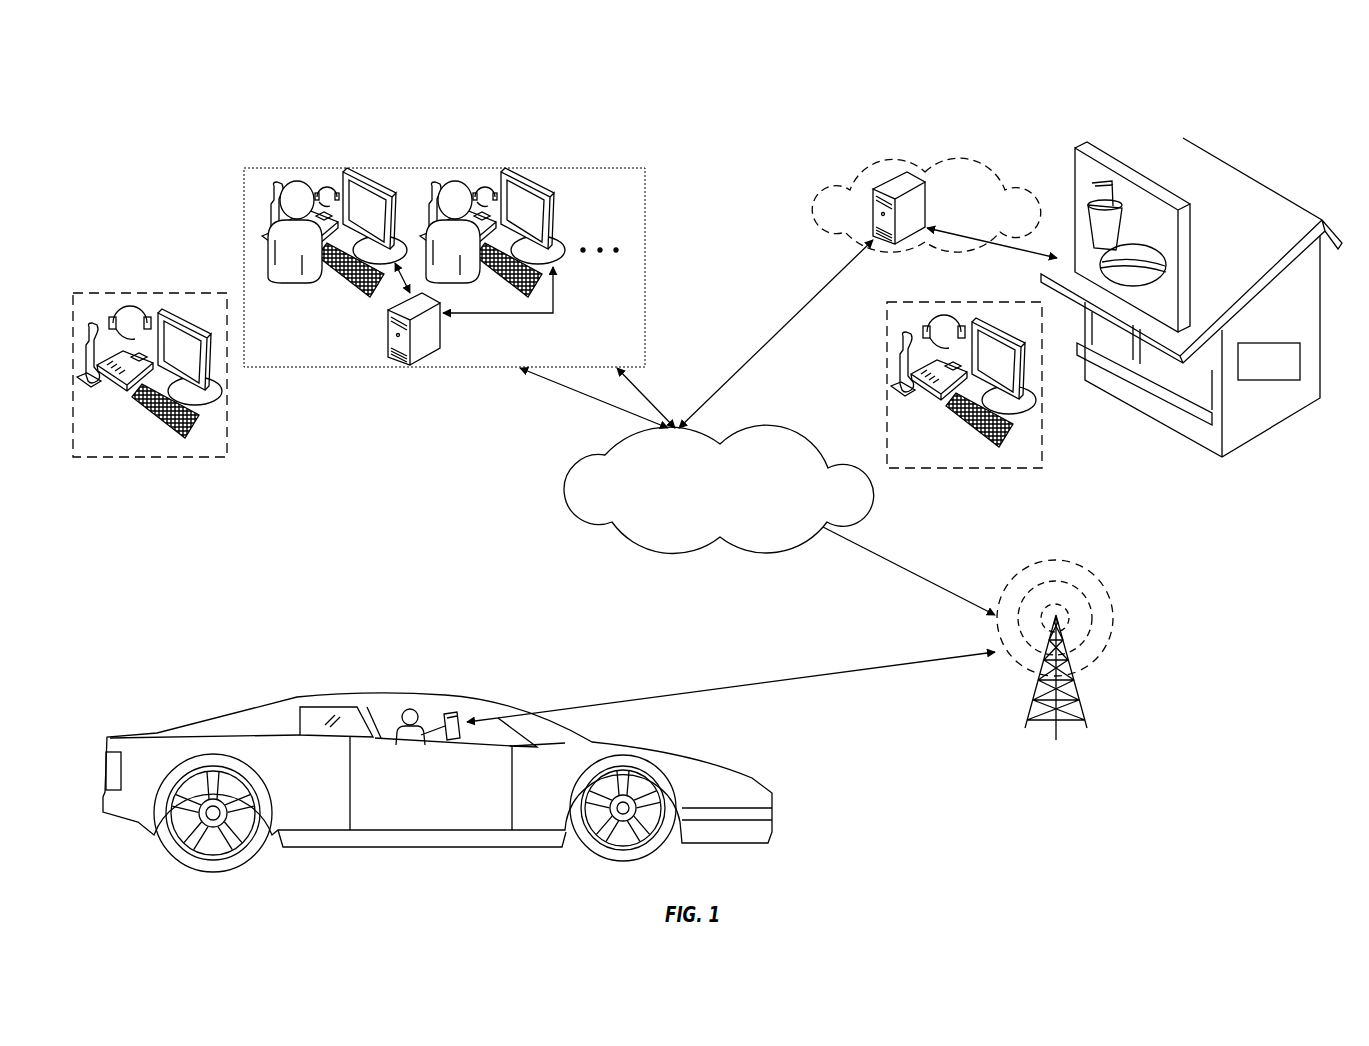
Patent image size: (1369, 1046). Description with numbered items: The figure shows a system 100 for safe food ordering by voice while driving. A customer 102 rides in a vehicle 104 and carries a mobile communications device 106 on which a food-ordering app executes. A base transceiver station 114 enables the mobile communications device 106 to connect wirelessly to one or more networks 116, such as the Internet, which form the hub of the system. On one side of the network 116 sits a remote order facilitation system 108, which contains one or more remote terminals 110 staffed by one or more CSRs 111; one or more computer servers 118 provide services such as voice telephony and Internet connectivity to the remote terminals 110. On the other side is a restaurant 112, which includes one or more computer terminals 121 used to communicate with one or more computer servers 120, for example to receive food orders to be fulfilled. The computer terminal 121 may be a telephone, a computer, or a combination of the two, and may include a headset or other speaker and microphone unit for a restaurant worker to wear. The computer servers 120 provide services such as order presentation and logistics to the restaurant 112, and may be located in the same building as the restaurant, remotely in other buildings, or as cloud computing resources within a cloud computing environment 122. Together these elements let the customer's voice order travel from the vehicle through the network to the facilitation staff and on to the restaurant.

The system 100 is at (1246, 116).
The customer 102 is at (401, 710).
The vehicle 104 is at (307, 697).
The mobile communications device 106 is at (448, 705).
The remote order facilitation system 108 is at (359, 279).
The remote terminal 110 is at (93, 293).
The CSR 111 is at (448, 182).
The restaurant 112 is at (1249, 446).
The base transceiver station 114 is at (1078, 697).
The network 116 is at (760, 428).
The computer server 118 is at (397, 367).
The computer server 120 is at (882, 172).
The computer terminal 121 is at (1042, 455).
The cloud computing environment 122 is at (975, 162).